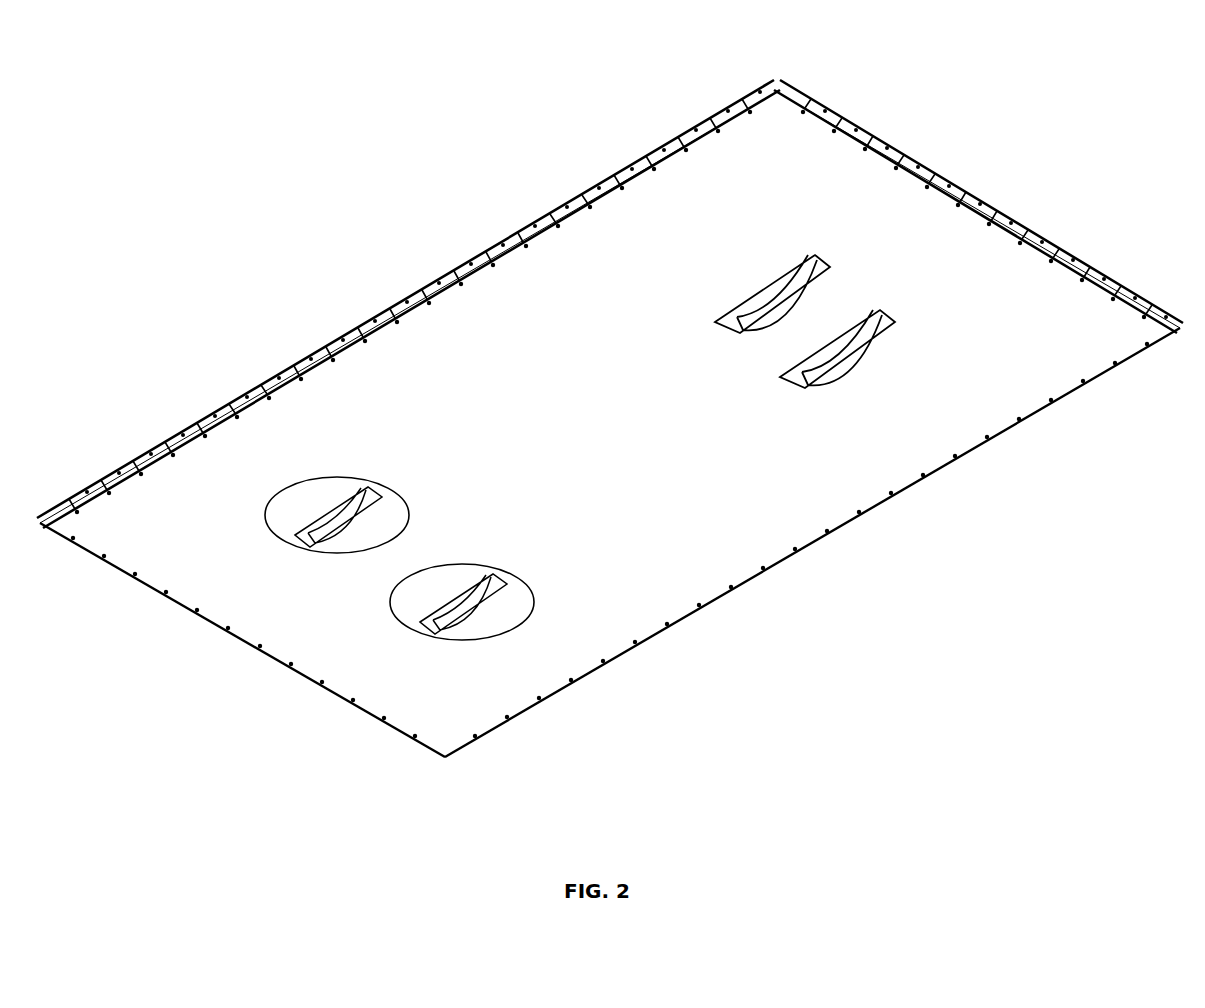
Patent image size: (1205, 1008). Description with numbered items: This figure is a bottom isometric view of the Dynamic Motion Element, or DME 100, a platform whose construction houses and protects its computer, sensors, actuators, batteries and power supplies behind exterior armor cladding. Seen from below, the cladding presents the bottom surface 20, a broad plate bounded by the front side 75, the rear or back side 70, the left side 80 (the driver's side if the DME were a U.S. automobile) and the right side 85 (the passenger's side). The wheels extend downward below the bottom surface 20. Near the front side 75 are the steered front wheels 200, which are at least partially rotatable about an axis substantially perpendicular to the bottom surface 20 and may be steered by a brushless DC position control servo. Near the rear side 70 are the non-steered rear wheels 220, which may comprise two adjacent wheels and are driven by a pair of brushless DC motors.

The Dynamic Motion Element (DME) 100 is at (289, 97).
The bottom surface 20 is at (642, 445).
The left side 80 is at (425, 284).
The rear side 70 is at (980, 205).
The front side 75 is at (243, 640).
The right side 85 is at (875, 512).
The front wheels 200 is at (455, 637).
The rear wheels 220 is at (893, 320).